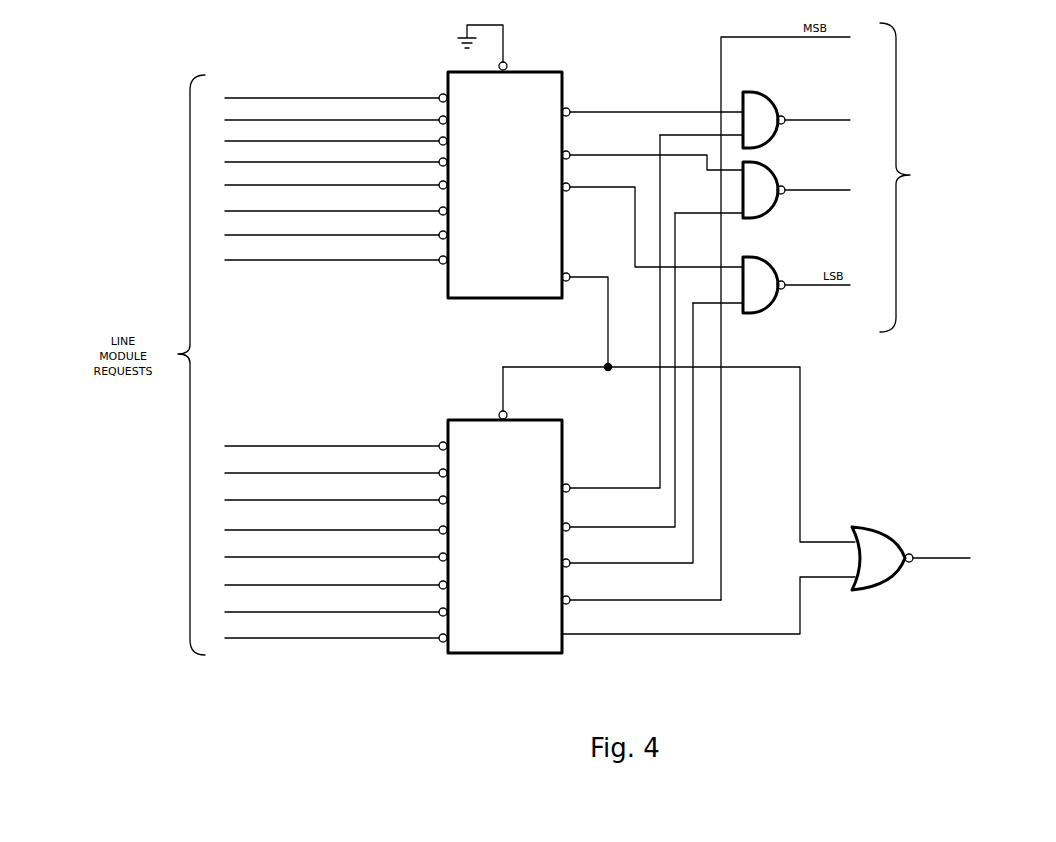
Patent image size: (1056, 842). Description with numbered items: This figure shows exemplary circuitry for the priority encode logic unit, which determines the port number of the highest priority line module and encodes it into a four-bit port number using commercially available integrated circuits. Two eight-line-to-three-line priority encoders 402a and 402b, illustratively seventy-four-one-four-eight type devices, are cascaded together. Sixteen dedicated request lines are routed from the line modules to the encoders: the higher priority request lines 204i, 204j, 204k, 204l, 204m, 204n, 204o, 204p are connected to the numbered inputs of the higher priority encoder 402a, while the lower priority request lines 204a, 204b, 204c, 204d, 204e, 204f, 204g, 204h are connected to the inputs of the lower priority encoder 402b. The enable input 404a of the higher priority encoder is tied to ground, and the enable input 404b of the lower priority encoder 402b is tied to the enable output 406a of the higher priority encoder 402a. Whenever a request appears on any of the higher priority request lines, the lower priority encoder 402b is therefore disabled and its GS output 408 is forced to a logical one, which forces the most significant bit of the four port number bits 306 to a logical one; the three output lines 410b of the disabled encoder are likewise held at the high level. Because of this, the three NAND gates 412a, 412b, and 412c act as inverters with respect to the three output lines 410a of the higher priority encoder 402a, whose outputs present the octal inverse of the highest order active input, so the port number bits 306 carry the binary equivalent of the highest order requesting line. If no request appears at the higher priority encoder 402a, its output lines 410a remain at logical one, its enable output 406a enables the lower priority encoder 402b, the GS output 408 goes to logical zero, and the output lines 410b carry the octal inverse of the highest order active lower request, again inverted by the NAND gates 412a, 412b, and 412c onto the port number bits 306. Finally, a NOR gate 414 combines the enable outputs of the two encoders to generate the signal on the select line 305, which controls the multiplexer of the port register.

The dedicated request line 204a is at (332, 630).
The dedicated request line 204b is at (332, 604).
The dedicated request line 204c is at (332, 577).
The dedicated request line 204d is at (332, 549).
The dedicated request line 204e is at (332, 522).
The dedicated request line 204f is at (332, 492).
The dedicated request line 204g is at (332, 465).
The dedicated request line 204h is at (332, 438).
The dedicated request line 204i is at (332, 252).
The dedicated request line 204j is at (332, 227).
The dedicated request line 204k is at (332, 203).
The dedicated request line 204l is at (332, 177).
The dedicated request line 204m is at (332, 154).
The dedicated request line 204n is at (332, 133).
The dedicated request line 204o is at (332, 112).
The dedicated request line 204p is at (332, 90).
The priority encoder 402a is at (563, 70).
The priority encoder 402b is at (466, 420).
The enable input 404a is at (520, 58).
The enable input 404b is at (514, 410).
The enable output 406a is at (576, 270).
The GS output 408 is at (577, 606).
The output lines 410a is at (604, 192).
The output lines 410b is at (660, 427).
The NAND gate 412a is at (768, 99).
The NAND gate 412b is at (768, 165).
The NAND gate 412c is at (760, 255).
The NOR gate 414 is at (872, 526).
The select line 305 is at (922, 560).
The port number bits 306 is at (896, 200).